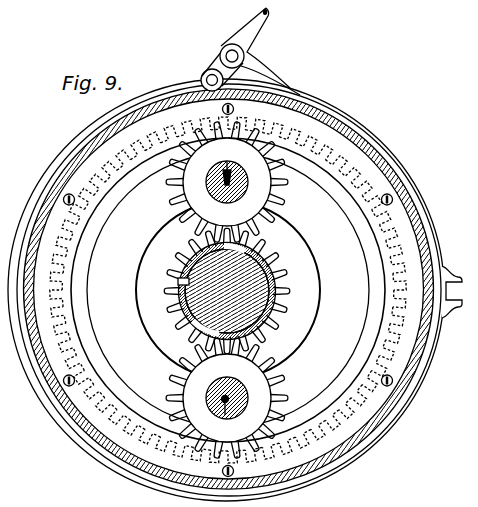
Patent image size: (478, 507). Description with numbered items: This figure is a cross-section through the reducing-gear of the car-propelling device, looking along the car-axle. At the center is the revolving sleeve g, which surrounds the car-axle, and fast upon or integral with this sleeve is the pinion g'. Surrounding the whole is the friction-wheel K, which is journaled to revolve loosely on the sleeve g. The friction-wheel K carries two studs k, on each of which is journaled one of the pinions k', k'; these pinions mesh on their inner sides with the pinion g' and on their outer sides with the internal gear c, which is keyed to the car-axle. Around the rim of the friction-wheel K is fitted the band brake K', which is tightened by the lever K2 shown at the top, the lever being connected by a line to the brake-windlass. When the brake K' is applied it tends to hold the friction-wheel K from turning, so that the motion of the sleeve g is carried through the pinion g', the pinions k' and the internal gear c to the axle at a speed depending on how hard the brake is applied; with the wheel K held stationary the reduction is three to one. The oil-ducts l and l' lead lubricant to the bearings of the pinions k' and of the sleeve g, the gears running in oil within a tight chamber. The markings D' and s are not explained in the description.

The lever K2 is at (250, 33).
The brake K' is at (226, 290).
The friction-wheel K is at (245, 289).
The internal gear c is at (78, 318).
The sleeve g is at (229, 290).
The pinion g' is at (257, 291).
The studs k is at (214, 290).
The pinions k' is at (227, 290).
The oil-duct l is at (233, 182).
The oil-duct l' is at (215, 398).
The casing part D' is at (11, 447).
The part s is at (1, 352).